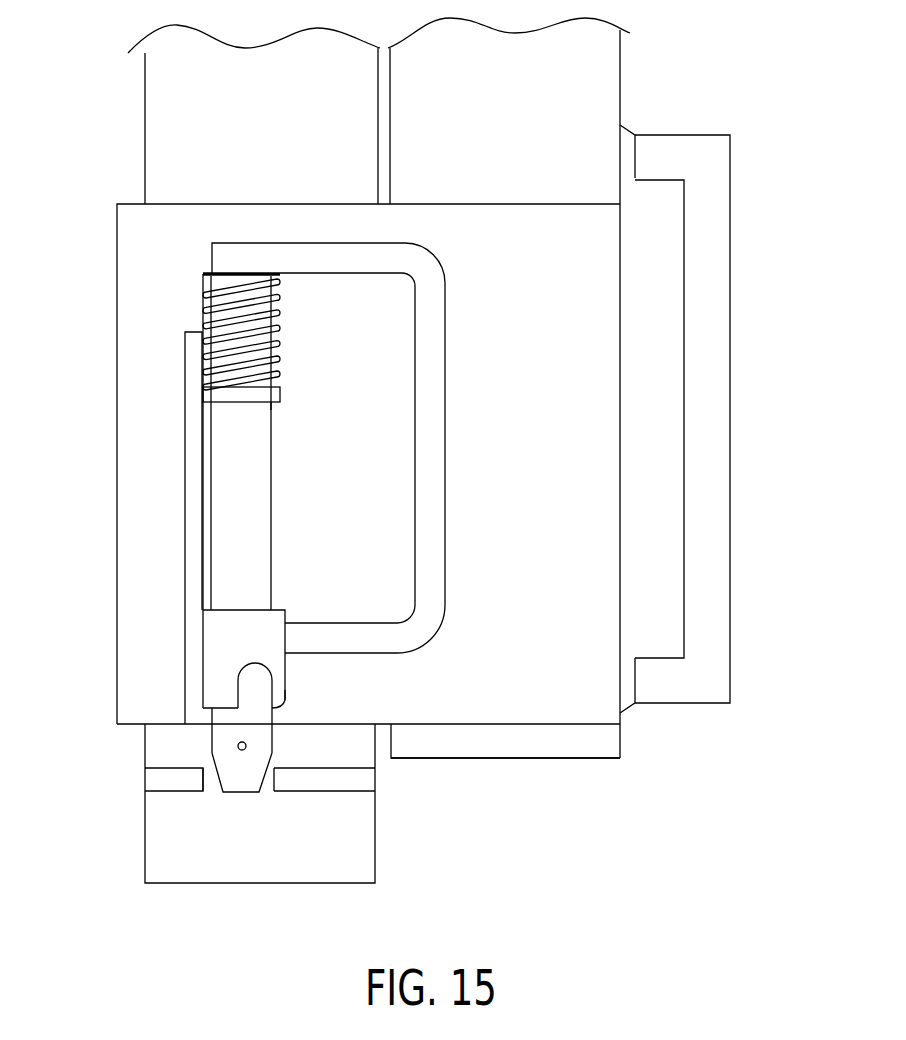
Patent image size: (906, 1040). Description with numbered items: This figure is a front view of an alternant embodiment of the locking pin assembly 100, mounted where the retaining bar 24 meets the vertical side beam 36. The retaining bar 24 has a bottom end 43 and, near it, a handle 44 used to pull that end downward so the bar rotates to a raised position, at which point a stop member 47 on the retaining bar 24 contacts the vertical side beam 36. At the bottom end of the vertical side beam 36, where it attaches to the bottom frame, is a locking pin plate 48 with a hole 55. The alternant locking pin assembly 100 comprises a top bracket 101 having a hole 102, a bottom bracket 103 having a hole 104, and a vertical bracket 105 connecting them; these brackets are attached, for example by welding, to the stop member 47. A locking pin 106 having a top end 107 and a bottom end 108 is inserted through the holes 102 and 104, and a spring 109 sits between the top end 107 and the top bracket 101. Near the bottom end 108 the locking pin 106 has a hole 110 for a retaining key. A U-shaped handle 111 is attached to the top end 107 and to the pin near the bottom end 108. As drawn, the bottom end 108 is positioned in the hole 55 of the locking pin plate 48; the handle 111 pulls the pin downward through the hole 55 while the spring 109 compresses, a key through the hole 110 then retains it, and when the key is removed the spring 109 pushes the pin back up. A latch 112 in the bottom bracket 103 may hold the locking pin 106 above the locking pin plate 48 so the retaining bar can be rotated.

The retaining bar 24 is at (597, 112).
The vertical side beam 36 is at (170, 122).
The bottom end 43 is at (507, 758).
The handle 44 is at (717, 467).
The stop member 47 is at (605, 555).
The locking pin plate 48 is at (362, 778).
The hole 55 is at (217, 773).
The alternant locking pin assembly 100 is at (168, 316).
The top bracket 101 is at (277, 399).
The hole 102 is at (278, 385).
The bottom bracket 103 is at (285, 672).
The hole 104 is at (272, 608).
The vertical bracket 105 is at (185, 527).
The locking pin 106 is at (257, 532).
The top end 107 is at (202, 275).
The bottom end 108 is at (242, 793).
The spring 109 is at (277, 330).
The hole 110 is at (246, 746).
The U-shaped handle 111 is at (437, 427).
The latch 112 is at (238, 680).